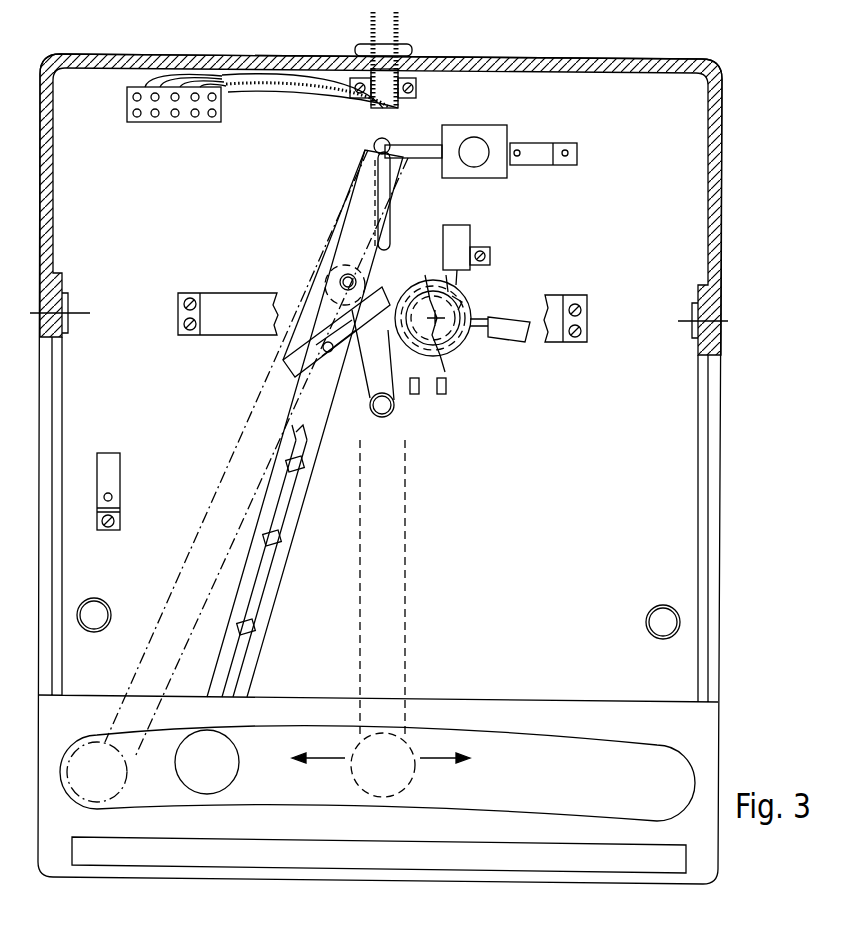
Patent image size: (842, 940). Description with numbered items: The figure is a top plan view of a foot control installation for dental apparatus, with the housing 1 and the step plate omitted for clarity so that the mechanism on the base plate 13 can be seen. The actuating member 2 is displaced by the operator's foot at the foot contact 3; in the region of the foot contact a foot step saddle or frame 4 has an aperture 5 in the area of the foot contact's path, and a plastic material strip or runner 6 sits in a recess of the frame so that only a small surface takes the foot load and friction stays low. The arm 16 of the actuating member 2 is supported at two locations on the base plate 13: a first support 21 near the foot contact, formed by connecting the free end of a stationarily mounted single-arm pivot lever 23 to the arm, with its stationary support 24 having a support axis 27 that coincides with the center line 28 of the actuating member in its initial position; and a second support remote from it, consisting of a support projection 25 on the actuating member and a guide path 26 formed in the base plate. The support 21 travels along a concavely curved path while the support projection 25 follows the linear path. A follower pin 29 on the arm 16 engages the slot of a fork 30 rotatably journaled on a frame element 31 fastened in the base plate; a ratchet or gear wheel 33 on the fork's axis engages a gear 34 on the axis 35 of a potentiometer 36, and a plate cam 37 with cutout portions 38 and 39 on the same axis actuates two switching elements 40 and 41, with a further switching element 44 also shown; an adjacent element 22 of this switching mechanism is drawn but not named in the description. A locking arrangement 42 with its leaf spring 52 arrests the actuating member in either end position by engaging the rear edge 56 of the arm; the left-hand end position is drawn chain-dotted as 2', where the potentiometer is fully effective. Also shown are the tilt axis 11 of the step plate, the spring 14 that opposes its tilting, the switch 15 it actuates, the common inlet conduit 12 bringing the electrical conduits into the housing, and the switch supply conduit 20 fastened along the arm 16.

The housing 1 is at (746, 204).
The actuating member 2 is at (305, 423).
The left-hand operative end position of the actuating member 2' is at (237, 476).
The foot contact 3 is at (265, 784).
The foot step saddle or frame 4 is at (240, 823).
The aperture 5 is at (160, 793).
The plastic material strip or runner 6 is at (95, 855).
The tilt axis 11 is at (82, 312).
The common inlet conduit 12 is at (371, 38).
The base plate 13 is at (520, 100).
The spring 14 is at (101, 606).
The switch 15 is at (110, 470).
The arm 16 is at (288, 558).
The switch supply conduit 20 is at (262, 592).
The first support 21 is at (345, 282).
The rotary switch 22 is at (389, 288).
The single-arm pivot lever 23 is at (356, 385).
The stationary support 24 is at (386, 420).
The support projection 25 is at (380, 182).
The guide path 26 is at (389, 242).
The support axis 27 is at (392, 414).
The center line 28 is at (388, 585).
The follower pin 29 is at (325, 345).
The fork 30 is at (292, 367).
The frame element 31 is at (230, 302).
The ratchet or gear wheel 33 is at (416, 388).
The gear 34 is at (464, 340).
The potentiometer axis 35 is at (470, 316).
The potentiometer 36 is at (447, 366).
The plate cam 37 is at (458, 300).
The cutout portion 38 is at (428, 285).
The cutout portion 39 is at (462, 358).
The switching element 40 is at (468, 233).
The switching element 41 is at (525, 332).
The locking arrangement 42 is at (490, 160).
The switching element 44 is at (550, 162).
The leaf spring 52 is at (422, 147).
The rear edge 56 is at (366, 153).